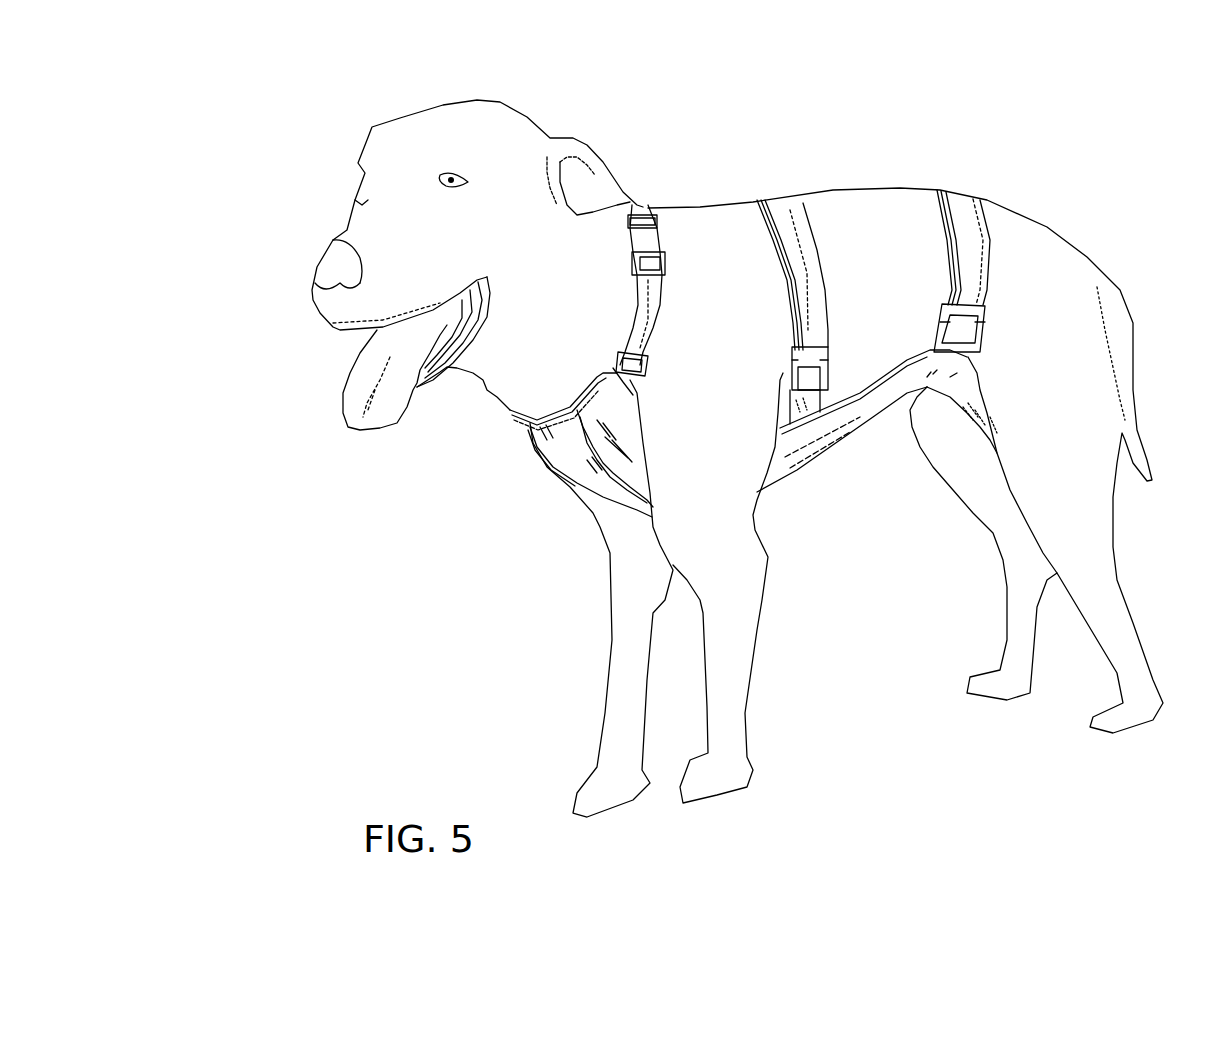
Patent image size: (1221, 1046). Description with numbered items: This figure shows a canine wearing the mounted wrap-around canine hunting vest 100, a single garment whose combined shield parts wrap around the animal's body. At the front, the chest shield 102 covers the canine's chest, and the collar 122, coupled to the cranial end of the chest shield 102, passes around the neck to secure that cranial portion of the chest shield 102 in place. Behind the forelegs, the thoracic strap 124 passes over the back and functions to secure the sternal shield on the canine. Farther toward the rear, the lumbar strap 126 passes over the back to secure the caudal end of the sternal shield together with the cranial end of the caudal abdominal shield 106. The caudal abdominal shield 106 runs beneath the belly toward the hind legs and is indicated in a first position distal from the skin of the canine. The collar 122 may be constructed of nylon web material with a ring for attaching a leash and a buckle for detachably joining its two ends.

The wrap-around canine hunting vest 100 is at (228, 195).
The chest shield 102 is at (533, 433).
The caudal abdominal shield 106 is at (967, 400).
The collar 122 is at (638, 217).
The thoracic strap 124 is at (792, 220).
The lumbar strap 126 is at (970, 218).